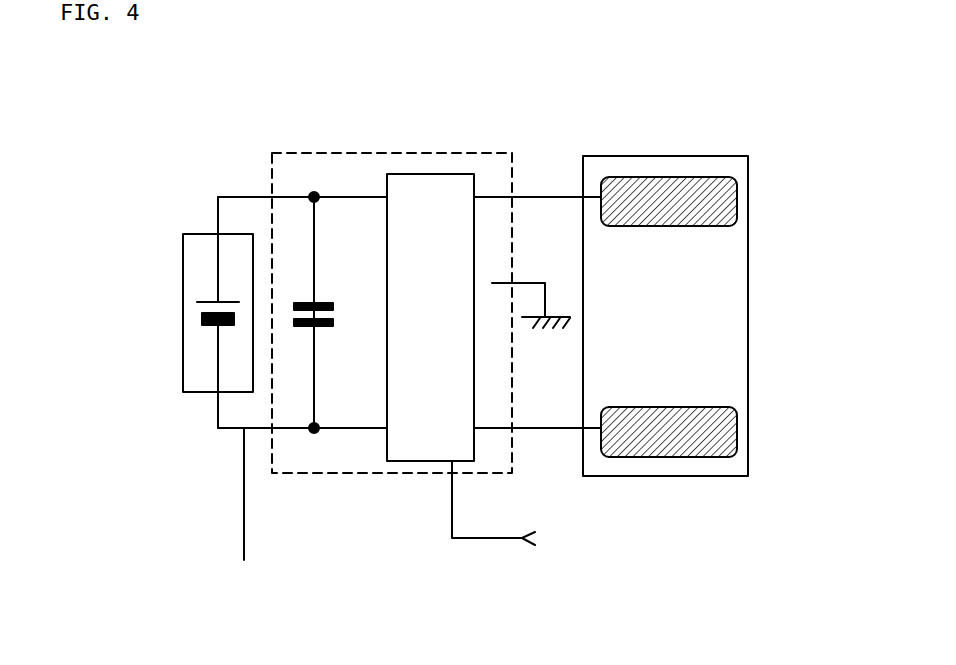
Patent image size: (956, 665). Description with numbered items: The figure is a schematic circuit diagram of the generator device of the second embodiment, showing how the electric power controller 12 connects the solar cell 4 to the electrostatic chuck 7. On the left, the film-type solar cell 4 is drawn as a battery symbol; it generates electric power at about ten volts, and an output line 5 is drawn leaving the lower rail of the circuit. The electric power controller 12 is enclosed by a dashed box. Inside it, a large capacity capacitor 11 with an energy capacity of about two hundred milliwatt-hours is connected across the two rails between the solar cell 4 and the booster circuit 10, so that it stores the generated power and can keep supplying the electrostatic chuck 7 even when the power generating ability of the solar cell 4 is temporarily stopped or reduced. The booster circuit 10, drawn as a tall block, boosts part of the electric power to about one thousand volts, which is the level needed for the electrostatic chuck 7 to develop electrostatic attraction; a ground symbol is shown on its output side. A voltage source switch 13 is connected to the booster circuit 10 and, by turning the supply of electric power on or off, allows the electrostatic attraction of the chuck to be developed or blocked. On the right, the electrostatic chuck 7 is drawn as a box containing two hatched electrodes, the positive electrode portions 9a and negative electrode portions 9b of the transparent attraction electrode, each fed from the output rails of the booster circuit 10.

The solar cell 4 is at (167, 389).
The output line 5 is at (244, 527).
The electrostatic chuck 7 is at (689, 144).
The positive electrode portions 9a is at (723, 208).
The negative electrode portions 9b is at (723, 426).
The booster circuit 10 is at (410, 443).
The large capacity capacitor 11 is at (325, 327).
The electric power controller 12 is at (386, 143).
The voltage source switch 13 is at (528, 545).